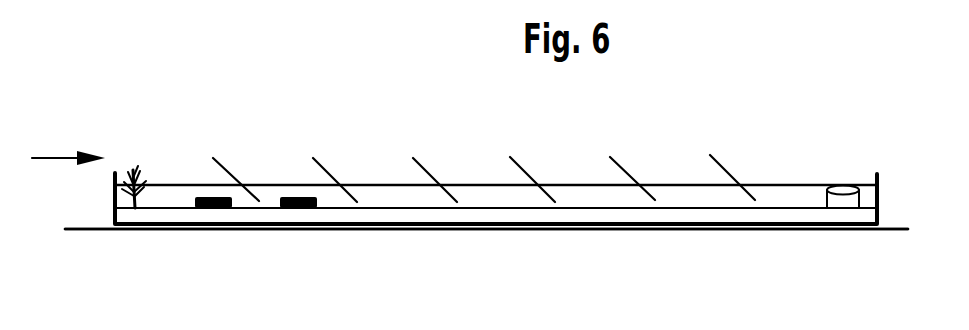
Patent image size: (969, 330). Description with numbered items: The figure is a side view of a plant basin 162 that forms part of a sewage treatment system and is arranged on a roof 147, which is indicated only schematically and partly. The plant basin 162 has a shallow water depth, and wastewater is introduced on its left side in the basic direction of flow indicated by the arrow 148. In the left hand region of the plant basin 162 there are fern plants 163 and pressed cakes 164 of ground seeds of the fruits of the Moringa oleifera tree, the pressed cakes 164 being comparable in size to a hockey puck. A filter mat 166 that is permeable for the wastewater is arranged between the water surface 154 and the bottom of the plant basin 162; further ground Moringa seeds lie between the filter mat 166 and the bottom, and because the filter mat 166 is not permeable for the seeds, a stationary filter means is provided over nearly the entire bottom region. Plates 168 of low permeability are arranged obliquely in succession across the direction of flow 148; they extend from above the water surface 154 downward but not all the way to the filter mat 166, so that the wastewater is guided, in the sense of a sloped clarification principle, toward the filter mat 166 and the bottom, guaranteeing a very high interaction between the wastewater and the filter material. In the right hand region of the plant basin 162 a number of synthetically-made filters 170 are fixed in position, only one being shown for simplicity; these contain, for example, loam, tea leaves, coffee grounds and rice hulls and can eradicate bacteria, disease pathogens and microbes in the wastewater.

The roof 147 is at (527, 230).
The arrow 148 is at (50, 158).
The water surface 154 is at (490, 183).
The plant basin 162 is at (397, 225).
The fern plants 163 is at (143, 180).
The pressed cakes 164 is at (300, 210).
The filter mat 166 is at (618, 208).
The plates 168 is at (423, 172).
The synthetically-made filters 170 is at (838, 188).